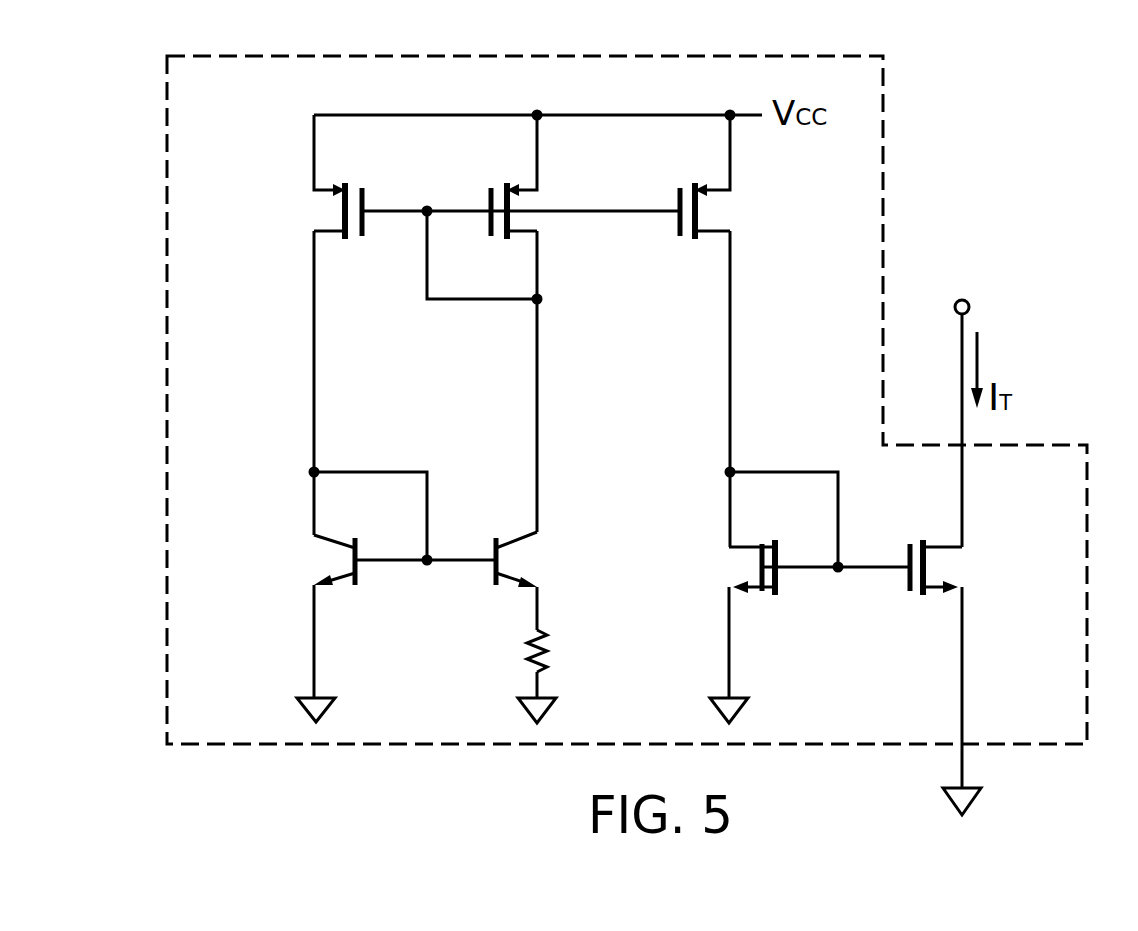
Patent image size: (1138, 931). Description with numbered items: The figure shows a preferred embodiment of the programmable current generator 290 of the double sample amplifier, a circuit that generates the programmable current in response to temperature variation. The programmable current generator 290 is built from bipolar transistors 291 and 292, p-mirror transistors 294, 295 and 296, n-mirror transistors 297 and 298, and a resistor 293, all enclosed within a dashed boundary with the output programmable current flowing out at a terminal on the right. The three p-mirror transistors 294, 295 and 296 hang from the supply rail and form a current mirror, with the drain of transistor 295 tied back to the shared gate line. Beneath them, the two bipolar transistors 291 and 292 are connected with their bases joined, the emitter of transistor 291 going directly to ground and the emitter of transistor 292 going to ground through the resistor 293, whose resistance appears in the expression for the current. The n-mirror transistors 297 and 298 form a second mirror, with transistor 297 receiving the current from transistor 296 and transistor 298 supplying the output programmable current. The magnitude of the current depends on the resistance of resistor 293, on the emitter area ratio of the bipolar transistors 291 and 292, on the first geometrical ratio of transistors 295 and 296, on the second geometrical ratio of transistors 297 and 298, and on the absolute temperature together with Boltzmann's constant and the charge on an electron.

The programmable current generator 290 is at (884, 131).
The bipolar transistor 291 is at (313, 559).
The bipolar transistor 292 is at (536, 563).
The resistor 293 is at (552, 650).
The p-mirror transistor 294 is at (300, 212).
The p-mirror transistor 295 is at (546, 226).
The p-mirror transistor 296 is at (738, 211).
The n-mirror transistor 297 is at (777, 593).
The n-mirror transistor 298 is at (963, 571).